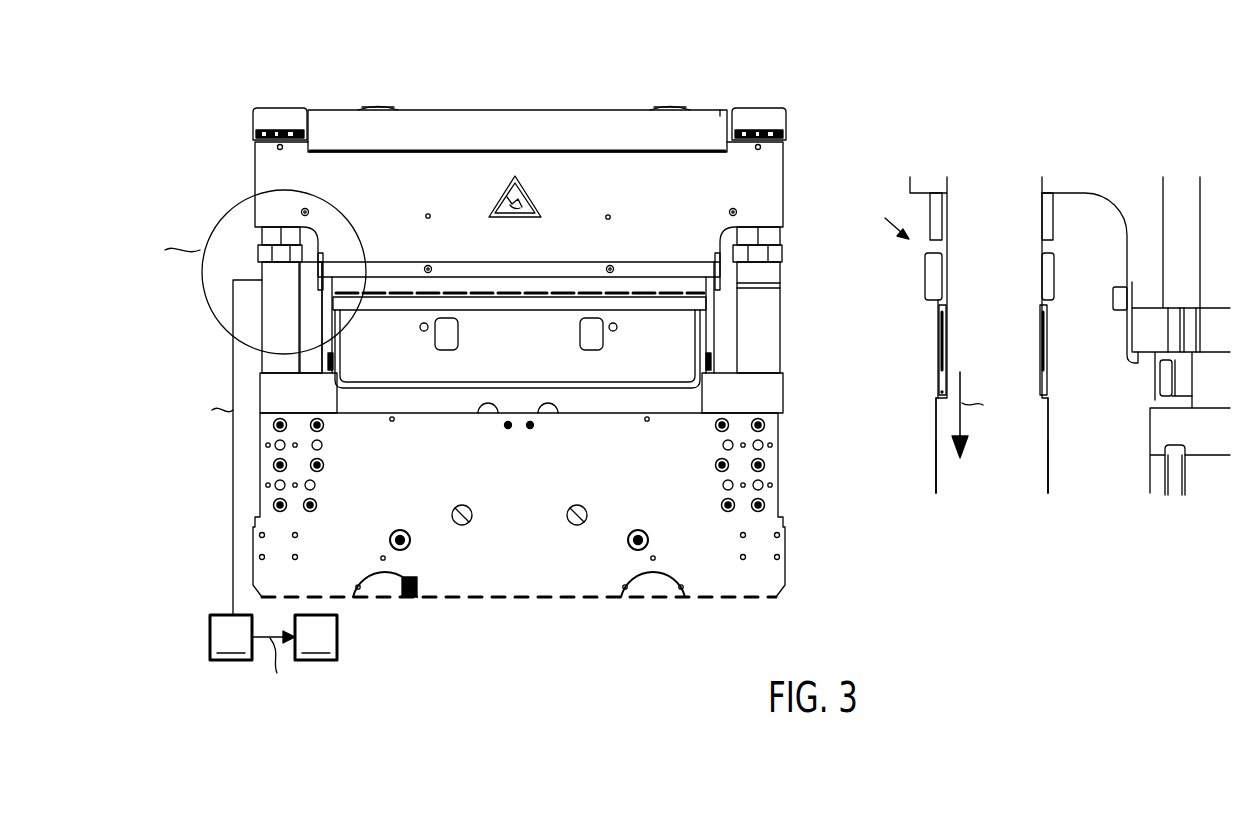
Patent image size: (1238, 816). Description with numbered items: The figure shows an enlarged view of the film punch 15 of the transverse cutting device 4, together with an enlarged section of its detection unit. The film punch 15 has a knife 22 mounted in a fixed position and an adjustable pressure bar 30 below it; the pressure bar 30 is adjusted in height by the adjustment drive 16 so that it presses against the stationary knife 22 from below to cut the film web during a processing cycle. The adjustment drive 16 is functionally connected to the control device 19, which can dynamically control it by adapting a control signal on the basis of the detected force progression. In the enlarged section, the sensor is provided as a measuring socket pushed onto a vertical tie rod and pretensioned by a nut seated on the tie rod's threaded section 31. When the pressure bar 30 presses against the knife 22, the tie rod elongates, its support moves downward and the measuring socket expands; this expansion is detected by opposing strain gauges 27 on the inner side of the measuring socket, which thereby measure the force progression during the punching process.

The transverse cutting device 4 is at (660, 82).
The film punch 15 is at (607, 110).
The adjustment drive 16 is at (316, 637).
The control device 19 is at (231, 637).
The knife 22 is at (553, 292).
The strain gauge 27 is at (1040, 347).
The pressure bar 30 is at (556, 300).
The threaded section 31 is at (1044, 272).